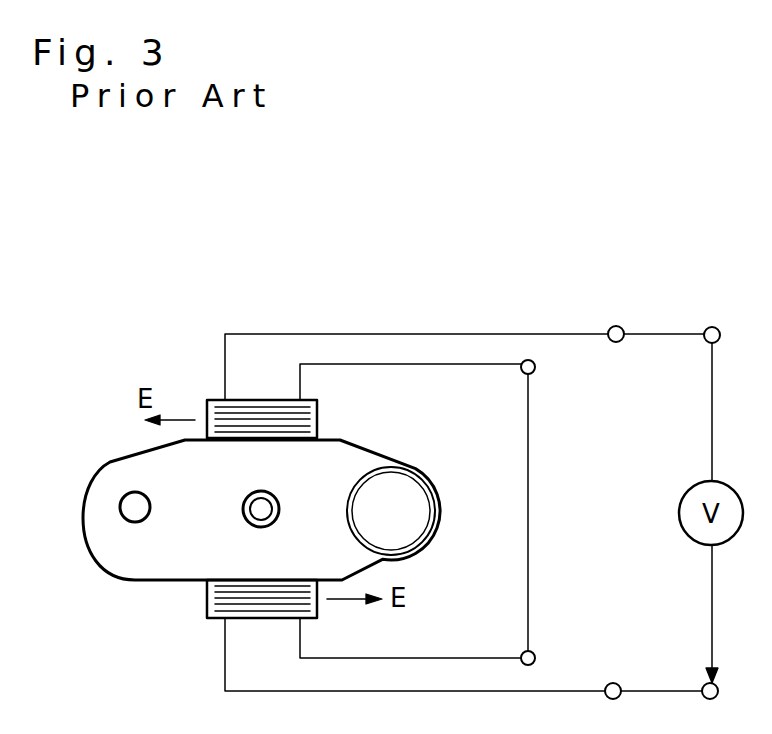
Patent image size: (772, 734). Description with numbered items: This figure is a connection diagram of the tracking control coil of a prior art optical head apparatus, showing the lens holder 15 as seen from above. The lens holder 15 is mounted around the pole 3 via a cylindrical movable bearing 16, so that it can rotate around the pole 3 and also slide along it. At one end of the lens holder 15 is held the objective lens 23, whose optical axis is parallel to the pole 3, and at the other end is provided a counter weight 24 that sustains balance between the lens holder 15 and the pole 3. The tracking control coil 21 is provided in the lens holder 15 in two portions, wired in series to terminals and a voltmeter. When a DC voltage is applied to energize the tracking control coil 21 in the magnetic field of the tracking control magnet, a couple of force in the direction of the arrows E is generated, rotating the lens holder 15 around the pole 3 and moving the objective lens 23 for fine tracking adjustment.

The lens holder 15 is at (105, 540).
The objective lens 23 is at (403, 488).
The counter weight 24 is at (122, 506).
The movable bearing 16 is at (247, 526).
The pole 3 is at (260, 510).
The tracking control coil 21 is at (300, 421).